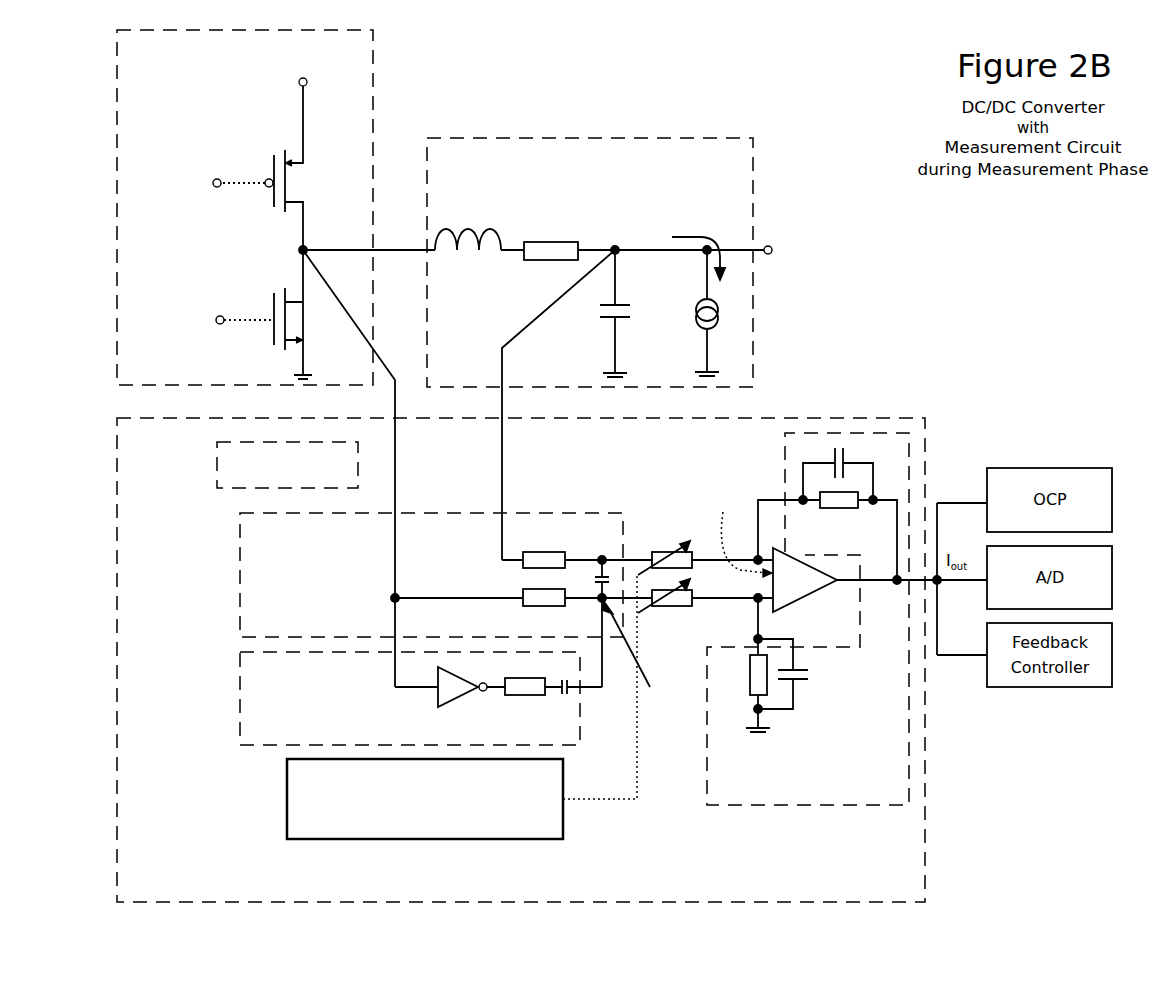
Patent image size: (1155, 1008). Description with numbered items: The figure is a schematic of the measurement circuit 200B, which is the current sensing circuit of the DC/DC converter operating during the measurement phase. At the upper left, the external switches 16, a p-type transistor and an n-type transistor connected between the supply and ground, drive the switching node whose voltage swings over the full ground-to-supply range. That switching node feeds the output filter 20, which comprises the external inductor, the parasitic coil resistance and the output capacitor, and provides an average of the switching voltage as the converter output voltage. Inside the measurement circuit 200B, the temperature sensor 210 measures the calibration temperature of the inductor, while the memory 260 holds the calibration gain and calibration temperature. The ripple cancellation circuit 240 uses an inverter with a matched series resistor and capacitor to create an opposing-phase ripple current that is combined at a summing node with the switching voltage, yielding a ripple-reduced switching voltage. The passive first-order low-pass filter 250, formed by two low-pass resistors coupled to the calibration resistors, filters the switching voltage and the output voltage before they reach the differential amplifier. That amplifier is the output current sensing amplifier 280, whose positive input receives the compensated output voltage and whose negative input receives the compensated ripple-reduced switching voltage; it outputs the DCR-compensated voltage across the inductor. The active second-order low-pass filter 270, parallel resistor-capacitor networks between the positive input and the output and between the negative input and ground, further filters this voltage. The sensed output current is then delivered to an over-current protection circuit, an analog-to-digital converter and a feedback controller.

The external switches 16 is at (276, 358).
The output filter 20 is at (621, 349).
The measurement circuit 200B is at (552, 660).
The temperature sensor 210 is at (287, 465).
The ripple cancellation circuit 240 is at (429, 698).
The passive first-order low-pass filter 250 is at (506, 600).
The memory 260 is at (462, 706).
The active second-order low-pass filter 270 is at (805, 697).
The output current sensing amplifier 280 is at (870, 527).